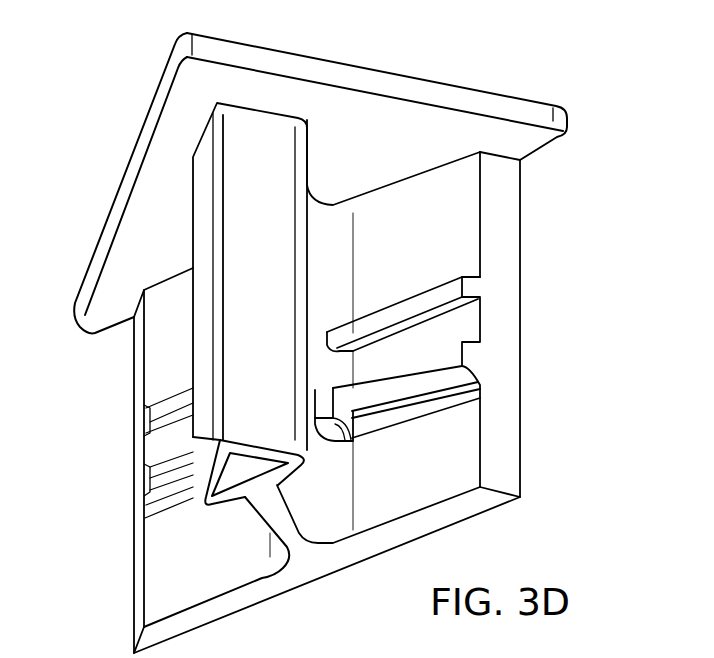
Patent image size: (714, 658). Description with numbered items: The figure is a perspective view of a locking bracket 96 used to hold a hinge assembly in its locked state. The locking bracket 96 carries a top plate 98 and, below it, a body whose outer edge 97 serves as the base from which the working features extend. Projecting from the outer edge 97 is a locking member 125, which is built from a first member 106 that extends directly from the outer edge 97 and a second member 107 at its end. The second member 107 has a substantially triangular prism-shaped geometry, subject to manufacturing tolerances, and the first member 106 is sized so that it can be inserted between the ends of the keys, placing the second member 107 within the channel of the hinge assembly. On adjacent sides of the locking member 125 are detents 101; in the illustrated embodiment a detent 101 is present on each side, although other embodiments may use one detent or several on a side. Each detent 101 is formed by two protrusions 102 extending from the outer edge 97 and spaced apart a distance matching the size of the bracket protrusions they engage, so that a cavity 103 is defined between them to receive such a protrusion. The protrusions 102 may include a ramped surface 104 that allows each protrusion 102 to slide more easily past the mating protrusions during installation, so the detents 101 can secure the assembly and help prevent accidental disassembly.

The locking bracket 96 is at (552, 35).
The top plate 98 is at (377, 66).
The outer edge 97 is at (455, 230).
The locking member 125 is at (240, 378).
The detent 101 is at (487, 307).
The protrusion 102 is at (420, 303).
The cavity 103 is at (450, 328).
The ramped surface 104 is at (407, 417).
The second member 107 is at (218, 466).
The first member 106 is at (283, 522).